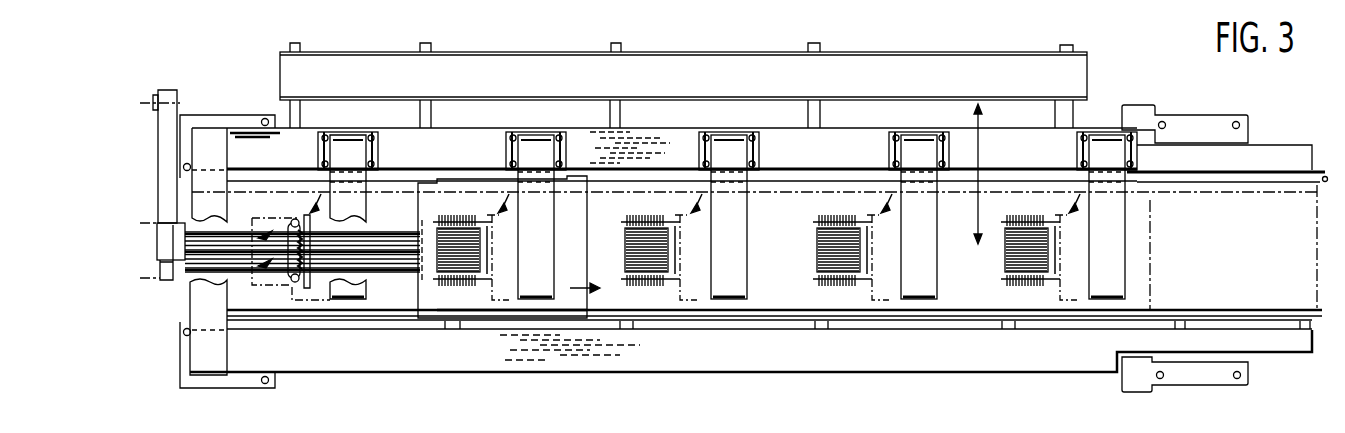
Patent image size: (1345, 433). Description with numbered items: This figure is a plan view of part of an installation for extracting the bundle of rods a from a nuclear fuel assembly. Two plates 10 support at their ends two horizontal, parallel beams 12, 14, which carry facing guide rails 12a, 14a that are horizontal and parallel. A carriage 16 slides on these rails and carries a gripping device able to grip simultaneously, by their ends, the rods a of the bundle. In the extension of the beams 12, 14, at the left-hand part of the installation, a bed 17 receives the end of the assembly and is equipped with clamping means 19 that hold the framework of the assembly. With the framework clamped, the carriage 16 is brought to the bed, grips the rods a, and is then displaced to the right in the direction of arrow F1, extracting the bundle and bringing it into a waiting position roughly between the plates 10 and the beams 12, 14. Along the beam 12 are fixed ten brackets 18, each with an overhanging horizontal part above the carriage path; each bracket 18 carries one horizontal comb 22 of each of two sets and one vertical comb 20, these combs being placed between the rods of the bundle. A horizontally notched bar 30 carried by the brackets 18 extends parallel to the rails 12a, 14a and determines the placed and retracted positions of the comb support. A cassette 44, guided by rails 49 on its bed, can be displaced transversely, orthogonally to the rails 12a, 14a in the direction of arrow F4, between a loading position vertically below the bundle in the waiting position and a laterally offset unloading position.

The plates 10 is at (243, 120).
The beam 12 is at (1043, 137).
The guide rail 12a is at (1307, 174).
The beam 14 is at (963, 365).
The guide rail 14a is at (840, 315).
The carriage 16 is at (472, 315).
The bed 17 is at (182, 282).
The bracket 18 is at (737, 298).
The clamping means 19 is at (186, 98).
The vertical combs 20 is at (816, 253).
The horizontal combs 22 is at (820, 213).
The notched bar 30 is at (1137, 188).
The cassette 44 is at (1046, 52).
The rails 49 is at (618, 46).
The rods a is at (402, 245).
The arrow F1 is at (574, 290).
The arrow F4 is at (980, 140).